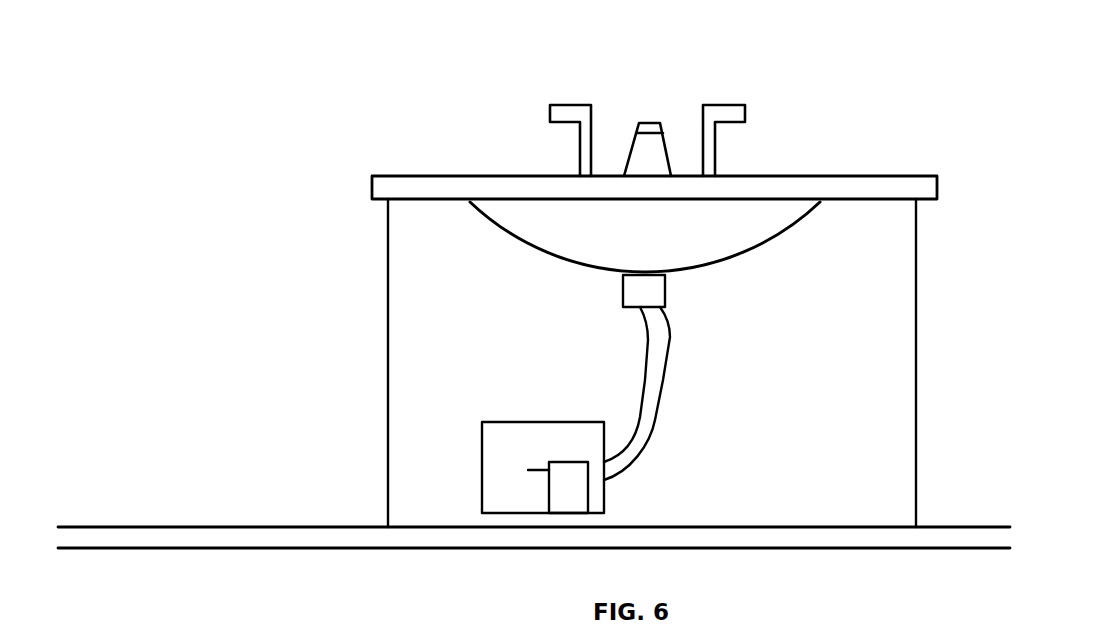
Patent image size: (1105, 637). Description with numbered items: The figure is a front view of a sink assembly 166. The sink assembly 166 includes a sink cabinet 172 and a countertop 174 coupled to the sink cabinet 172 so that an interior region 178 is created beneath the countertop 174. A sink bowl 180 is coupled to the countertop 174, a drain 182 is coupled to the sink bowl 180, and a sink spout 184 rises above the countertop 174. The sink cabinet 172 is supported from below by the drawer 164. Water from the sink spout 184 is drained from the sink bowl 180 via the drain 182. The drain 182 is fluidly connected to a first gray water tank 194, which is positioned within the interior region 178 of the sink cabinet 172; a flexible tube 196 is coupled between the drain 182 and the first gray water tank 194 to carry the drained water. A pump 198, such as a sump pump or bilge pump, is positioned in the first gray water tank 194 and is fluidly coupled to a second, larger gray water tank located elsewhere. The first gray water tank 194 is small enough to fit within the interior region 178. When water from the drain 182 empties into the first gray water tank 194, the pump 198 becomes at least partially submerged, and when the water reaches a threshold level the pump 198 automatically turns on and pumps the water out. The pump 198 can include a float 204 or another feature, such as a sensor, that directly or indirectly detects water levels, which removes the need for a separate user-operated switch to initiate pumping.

The drawer 164 is at (952, 539).
The sink assembly 166 is at (275, 146).
The sink cabinet 172 is at (388, 363).
The countertop 174 is at (927, 188).
The interior region 178 is at (782, 342).
The sink bowl 180 is at (748, 237).
The drain 182 is at (628, 295).
The sink spout 184 is at (650, 127).
The first gray water tank 194 is at (505, 492).
The flexible tube 196 is at (650, 423).
The pump 198 is at (575, 490).
The float 204 is at (533, 438).